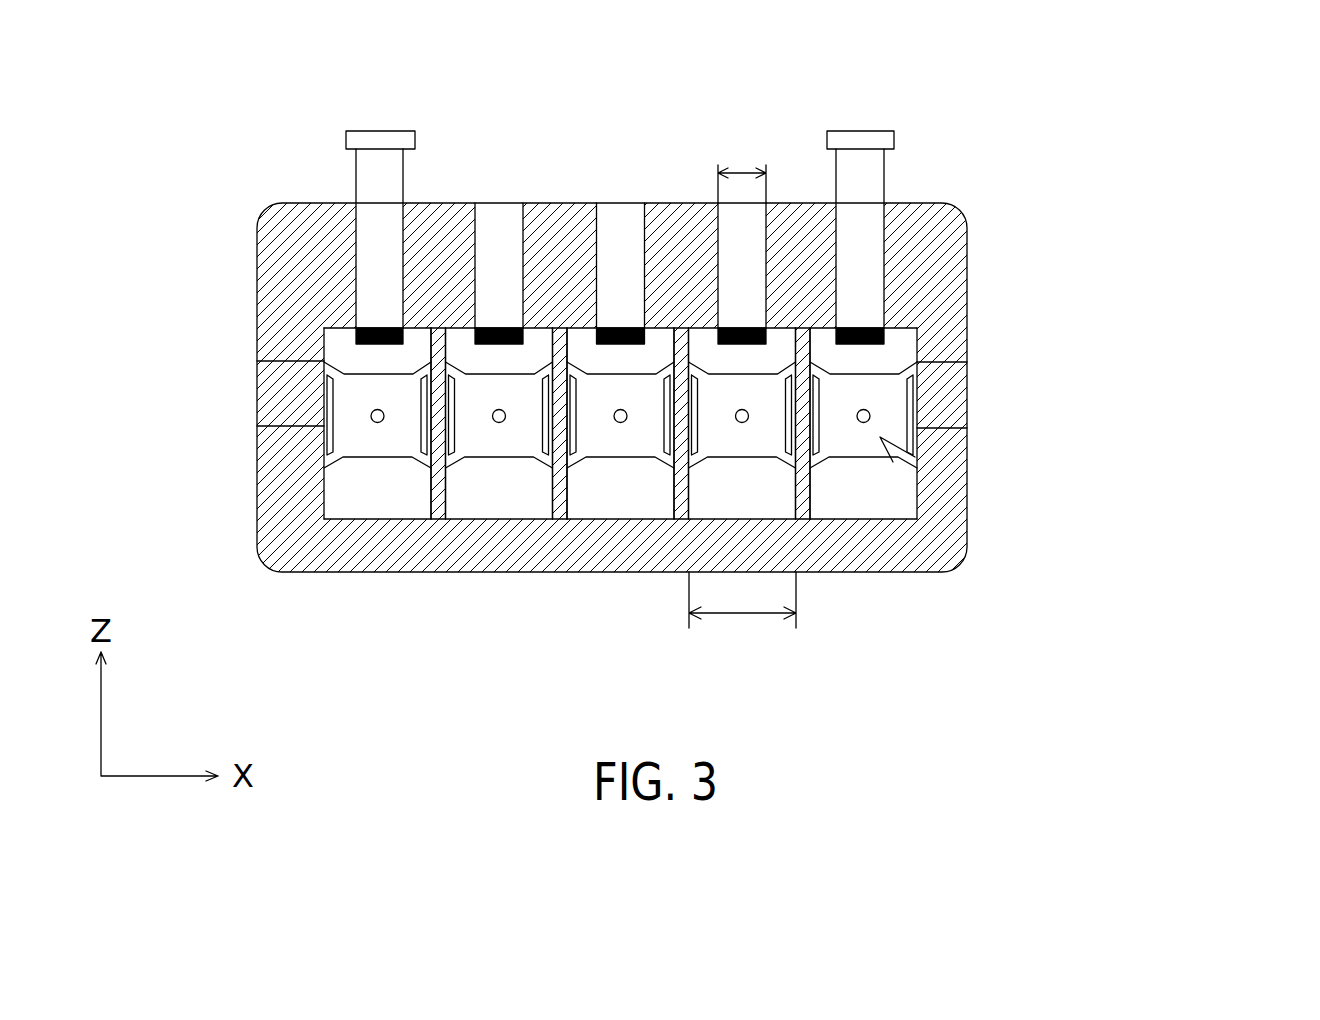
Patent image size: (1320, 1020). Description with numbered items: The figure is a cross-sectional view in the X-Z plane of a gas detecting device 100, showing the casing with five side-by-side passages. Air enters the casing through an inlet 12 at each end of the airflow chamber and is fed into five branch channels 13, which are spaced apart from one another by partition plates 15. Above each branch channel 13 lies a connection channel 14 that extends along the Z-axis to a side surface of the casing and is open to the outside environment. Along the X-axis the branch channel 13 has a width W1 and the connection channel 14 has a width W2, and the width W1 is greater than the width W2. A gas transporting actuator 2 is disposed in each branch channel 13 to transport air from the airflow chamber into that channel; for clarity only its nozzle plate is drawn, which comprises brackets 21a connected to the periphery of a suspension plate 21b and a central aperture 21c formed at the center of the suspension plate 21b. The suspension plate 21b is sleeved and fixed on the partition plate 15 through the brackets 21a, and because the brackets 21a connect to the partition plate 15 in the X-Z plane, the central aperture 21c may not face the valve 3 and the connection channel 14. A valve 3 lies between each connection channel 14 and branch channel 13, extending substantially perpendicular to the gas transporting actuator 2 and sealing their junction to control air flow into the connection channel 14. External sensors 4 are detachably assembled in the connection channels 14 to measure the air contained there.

The gas detecting device 100 is at (1310, 112).
The gas transporting actuator 2 is at (957, 543).
The valve 3 is at (920, 278).
The external sensor 4 is at (388, 177).
The inlet 12 is at (258, 352).
The branch channel 13 is at (740, 490).
The connection channel 14 is at (750, 228).
The partition plate 15 is at (803, 475).
The bracket 21a is at (912, 369).
The suspension plate 21b is at (893, 410).
The central aperture 21c is at (871, 415).
The width of the branch channel W1 is at (742, 600).
The width of the connection channel W2 is at (742, 163).